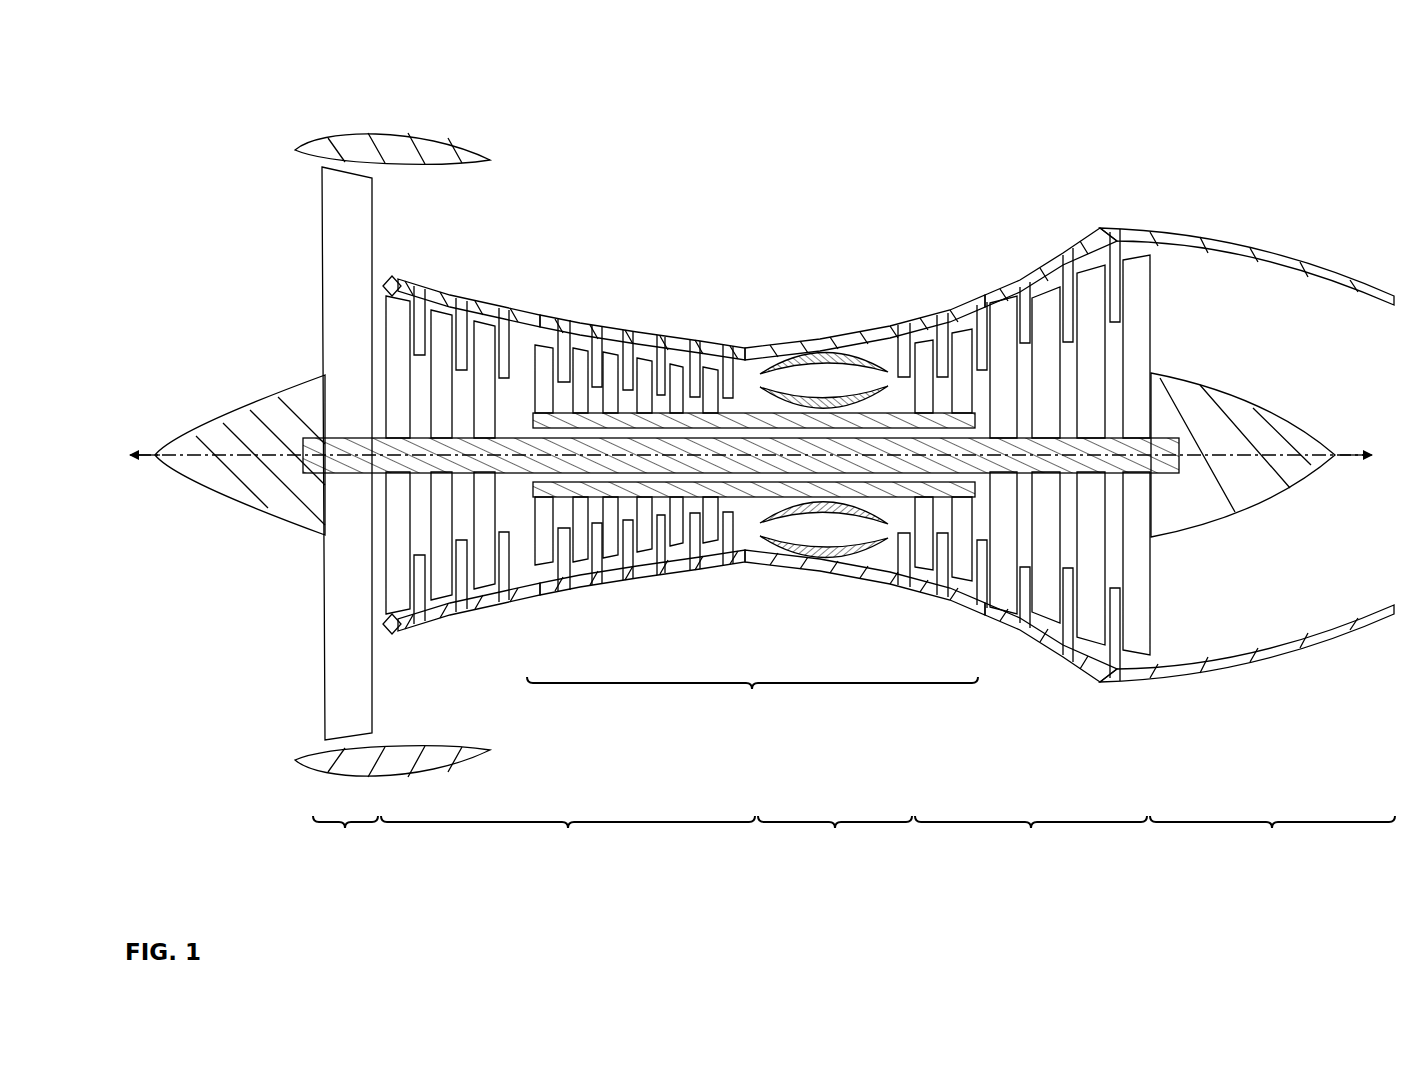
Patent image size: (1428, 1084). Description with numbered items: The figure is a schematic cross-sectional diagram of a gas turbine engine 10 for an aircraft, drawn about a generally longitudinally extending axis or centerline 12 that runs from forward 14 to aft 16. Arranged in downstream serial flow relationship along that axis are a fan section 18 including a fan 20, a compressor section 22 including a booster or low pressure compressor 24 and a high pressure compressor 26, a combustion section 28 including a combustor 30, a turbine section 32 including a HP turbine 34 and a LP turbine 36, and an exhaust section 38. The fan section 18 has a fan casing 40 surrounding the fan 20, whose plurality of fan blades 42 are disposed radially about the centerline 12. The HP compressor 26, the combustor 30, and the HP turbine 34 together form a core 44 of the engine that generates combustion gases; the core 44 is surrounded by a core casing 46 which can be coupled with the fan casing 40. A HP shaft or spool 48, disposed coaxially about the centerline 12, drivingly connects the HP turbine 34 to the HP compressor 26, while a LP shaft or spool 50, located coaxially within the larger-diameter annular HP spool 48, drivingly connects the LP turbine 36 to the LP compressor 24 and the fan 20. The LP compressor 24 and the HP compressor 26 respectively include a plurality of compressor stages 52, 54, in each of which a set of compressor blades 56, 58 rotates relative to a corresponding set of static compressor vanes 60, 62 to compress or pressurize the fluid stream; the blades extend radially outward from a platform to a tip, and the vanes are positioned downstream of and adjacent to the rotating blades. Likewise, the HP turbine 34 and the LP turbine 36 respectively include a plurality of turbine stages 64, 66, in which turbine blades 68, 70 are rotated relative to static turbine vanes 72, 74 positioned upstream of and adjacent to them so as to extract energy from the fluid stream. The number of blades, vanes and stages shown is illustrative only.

The gas turbine engine 10 is at (182, 66).
The centerline 12 is at (215, 446).
The forward 14 is at (126, 455).
The aft 16 is at (1374, 455).
The fan section 18 is at (345, 841).
The fan 20 is at (301, 453).
The compressor section 22 is at (568, 841).
The low pressure compressor 24 is at (522, 606).
The high pressure compressor 26 is at (640, 427).
The combustion section 28 is at (835, 841).
The combustor 30 is at (911, 399).
The turbine section 32 is at (1031, 841).
The HP turbine 34 is at (1019, 417).
The LP turbine 36 is at (1030, 640).
The exhaust section 38 is at (1272, 841).
The fan casing 40 is at (400, 131).
The fan blades 42 is at (337, 683).
The core 44 is at (752, 700).
The core casing 46 is at (802, 352).
The HP shaft or spool 48 is at (755, 412).
The LP shaft or spool 50 is at (517, 437).
The compressor stages 52 is at (446, 398).
The compressor stages 54 is at (546, 312).
The compressor blades 56 is at (400, 303).
The compressor blades 58 is at (561, 380).
The static compressor vanes 60 is at (421, 345).
The static compressor vanes 62 is at (576, 378).
The turbine stages 64 is at (930, 302).
The turbine stages 66 is at (1062, 250).
The turbine blades 68 is at (962, 347).
The turbine blades 70 is at (1090, 297).
The static turbine vanes 72 is at (947, 337).
The static turbine vanes 74 is at (1070, 252).